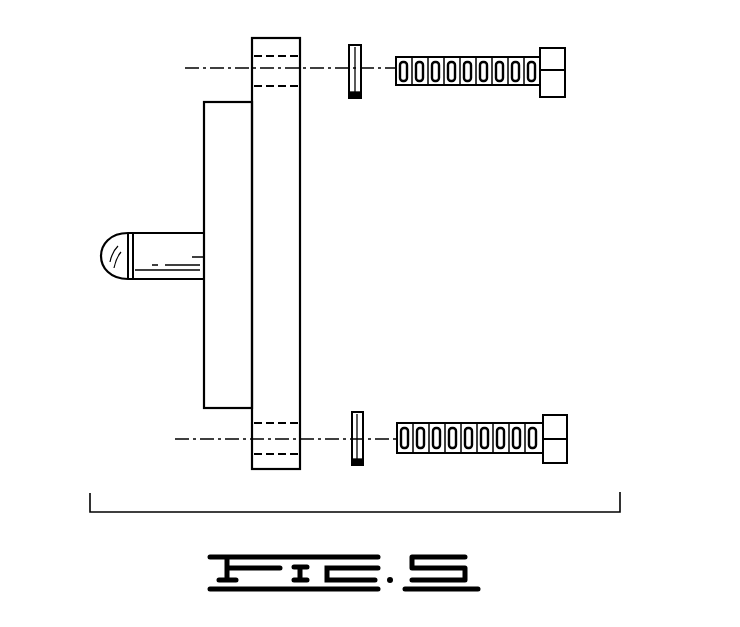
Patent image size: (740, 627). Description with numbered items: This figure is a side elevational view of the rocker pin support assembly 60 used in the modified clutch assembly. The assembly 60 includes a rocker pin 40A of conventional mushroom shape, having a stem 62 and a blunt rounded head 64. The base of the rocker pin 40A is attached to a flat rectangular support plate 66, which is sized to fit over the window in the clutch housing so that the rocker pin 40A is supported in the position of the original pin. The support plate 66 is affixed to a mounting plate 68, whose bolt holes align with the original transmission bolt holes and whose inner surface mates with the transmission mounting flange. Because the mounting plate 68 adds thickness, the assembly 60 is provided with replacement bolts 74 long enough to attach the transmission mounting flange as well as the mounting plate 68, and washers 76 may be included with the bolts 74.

The rocker pin 40A is at (165, 229).
The rocker pin support assembly 60 is at (528, 252).
The stem 62 is at (168, 283).
The blunt rounded head 64 is at (108, 250).
The support plate 66 is at (215, 135).
The mounting plate 68 is at (292, 238).
The replacement bolts 74 is at (494, 85).
The washers 76 is at (356, 98).